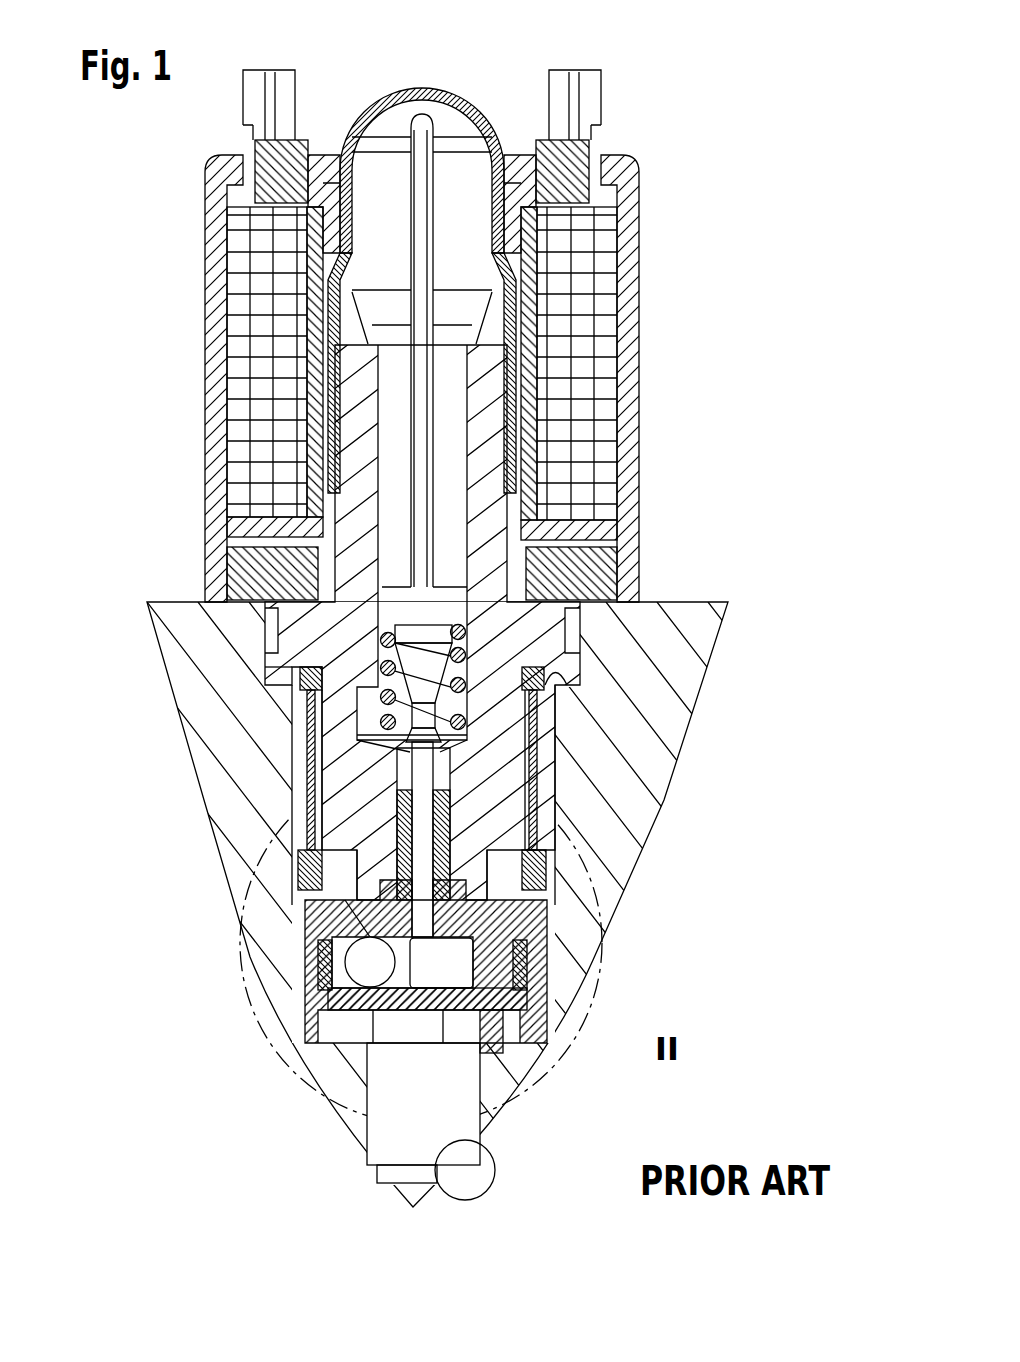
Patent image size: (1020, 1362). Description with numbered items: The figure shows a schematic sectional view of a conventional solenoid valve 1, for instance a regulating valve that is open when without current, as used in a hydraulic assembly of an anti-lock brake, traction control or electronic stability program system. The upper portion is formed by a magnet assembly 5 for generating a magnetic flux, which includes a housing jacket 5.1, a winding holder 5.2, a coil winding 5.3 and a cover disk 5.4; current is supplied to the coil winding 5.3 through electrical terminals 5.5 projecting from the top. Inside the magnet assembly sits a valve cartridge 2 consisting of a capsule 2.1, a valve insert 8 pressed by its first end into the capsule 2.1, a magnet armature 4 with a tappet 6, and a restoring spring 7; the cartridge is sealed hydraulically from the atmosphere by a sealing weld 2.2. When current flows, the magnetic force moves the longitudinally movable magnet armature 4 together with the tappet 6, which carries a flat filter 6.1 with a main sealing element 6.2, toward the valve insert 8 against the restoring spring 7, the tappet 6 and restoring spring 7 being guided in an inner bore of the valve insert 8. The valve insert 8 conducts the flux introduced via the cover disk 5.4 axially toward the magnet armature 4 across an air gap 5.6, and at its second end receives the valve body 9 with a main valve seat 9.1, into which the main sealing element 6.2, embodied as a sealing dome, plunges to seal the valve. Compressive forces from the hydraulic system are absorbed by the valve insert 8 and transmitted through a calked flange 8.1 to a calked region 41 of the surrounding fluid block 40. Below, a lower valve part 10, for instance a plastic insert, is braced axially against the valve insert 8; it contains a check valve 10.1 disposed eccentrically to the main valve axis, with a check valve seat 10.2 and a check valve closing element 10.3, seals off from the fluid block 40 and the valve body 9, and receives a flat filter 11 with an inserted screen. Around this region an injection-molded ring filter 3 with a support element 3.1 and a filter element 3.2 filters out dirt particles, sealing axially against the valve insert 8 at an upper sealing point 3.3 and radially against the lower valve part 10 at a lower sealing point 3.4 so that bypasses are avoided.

The solenoid valve 1 is at (626, 79).
The valve cartridge 2 is at (328, 98).
The capsule 2.1 is at (468, 98).
The sealing weld 2.2 is at (330, 440).
The ring filter 3 is at (232, 711).
The support element 3.1 is at (300, 680).
The filter element 3.2 is at (308, 760).
The upper sealing point 3.3 is at (560, 690).
The lower sealing point 3.4 is at (553, 867).
The magnet armature 4 is at (256, 145).
The magnet assembly 5 is at (680, 131).
The housing jacket 5.1 is at (632, 503).
The winding holder 5.2 is at (532, 283).
The coil winding 5.3 is at (600, 305).
The cover disk 5.4 is at (245, 558).
The electrical terminals 5.5 is at (268, 72).
The air gap 5.6 is at (498, 355).
The tappet 6 is at (455, 485).
The flat filter 6.1 is at (600, 598).
The main sealing element 6.2 is at (437, 657).
The restoring spring 7 is at (590, 553).
The valve insert 8 is at (355, 512).
The calked flange 8.1 is at (573, 668).
The valve body 9 is at (380, 838).
The main valve seat 9.1 is at (365, 790).
The lower valve part 10 is at (318, 930).
The check valve 10.1 is at (343, 1056).
The check valve seat 10.2 is at (445, 1025).
The check valve closing element 10.3 is at (325, 1000).
The flat filter 11 is at (360, 985).
The fluid block 40 is at (677, 623).
The calked region 41 is at (270, 660).